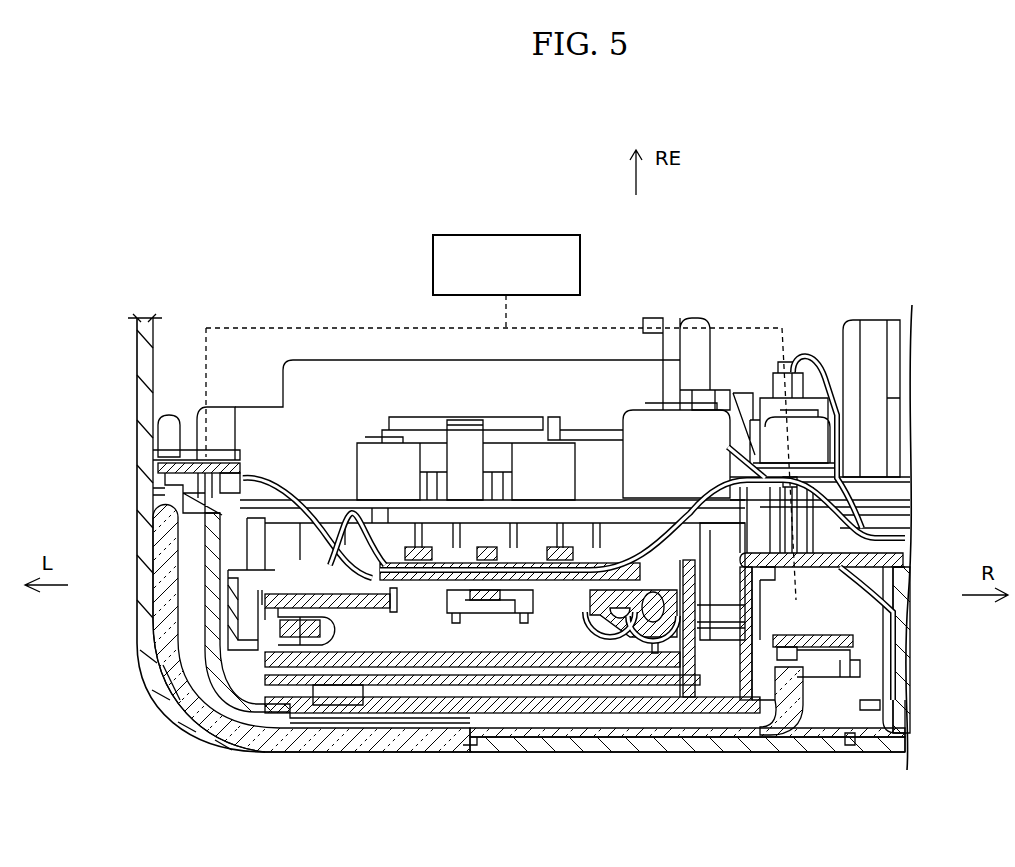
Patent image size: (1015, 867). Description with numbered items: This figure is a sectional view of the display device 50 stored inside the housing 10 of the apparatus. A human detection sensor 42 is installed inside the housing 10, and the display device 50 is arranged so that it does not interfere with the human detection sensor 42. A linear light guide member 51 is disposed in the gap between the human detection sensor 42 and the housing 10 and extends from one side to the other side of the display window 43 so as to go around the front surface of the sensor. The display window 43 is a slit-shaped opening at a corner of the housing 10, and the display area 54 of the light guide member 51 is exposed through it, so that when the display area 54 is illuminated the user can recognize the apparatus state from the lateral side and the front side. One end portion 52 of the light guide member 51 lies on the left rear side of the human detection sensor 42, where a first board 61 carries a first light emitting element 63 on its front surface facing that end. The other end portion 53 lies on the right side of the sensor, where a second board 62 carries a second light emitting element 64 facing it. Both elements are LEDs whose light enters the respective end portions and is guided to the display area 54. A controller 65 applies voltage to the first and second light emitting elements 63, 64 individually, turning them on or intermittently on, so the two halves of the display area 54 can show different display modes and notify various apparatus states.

The housing 10 is at (637, 752).
The human detection sensor 42 is at (536, 685).
The display window 43 is at (172, 697).
The display device 50 is at (432, 785).
The light guide member 51 is at (358, 752).
The one end portion 52 is at (158, 508).
The other end portion 53 is at (790, 687).
The display area 54 is at (268, 752).
The first board 61 is at (243, 487).
The second board 62 is at (838, 651).
The first light emitting element 63 is at (150, 476).
The second light emitting element 64 is at (798, 697).
The controller 65 is at (580, 247).